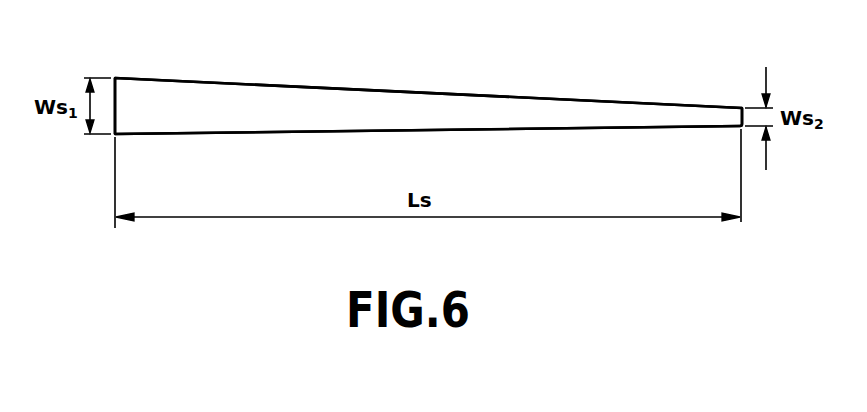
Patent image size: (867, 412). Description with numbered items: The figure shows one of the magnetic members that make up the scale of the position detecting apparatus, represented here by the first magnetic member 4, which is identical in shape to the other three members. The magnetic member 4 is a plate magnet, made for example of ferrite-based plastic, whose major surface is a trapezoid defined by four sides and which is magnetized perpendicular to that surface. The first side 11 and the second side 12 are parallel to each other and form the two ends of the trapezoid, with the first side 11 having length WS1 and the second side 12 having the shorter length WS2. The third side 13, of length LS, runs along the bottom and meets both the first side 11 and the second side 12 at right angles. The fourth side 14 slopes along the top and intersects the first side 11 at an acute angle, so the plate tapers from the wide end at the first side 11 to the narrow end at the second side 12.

The first magnetic member 4 is at (281, 90).
The first side 11 is at (116, 99).
The second side 12 is at (740, 116).
The third side 13 is at (595, 129).
The fourth side 14 is at (493, 93).